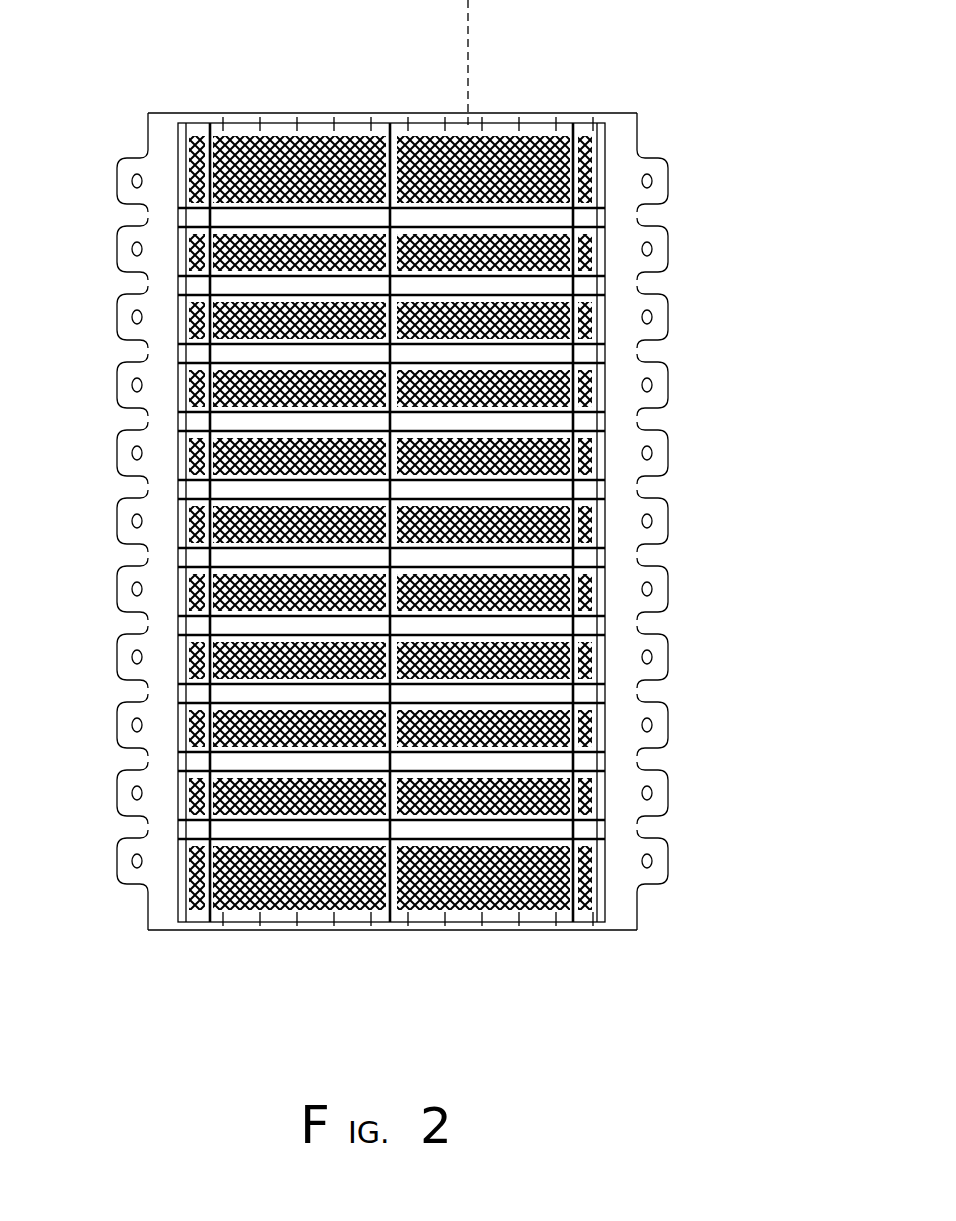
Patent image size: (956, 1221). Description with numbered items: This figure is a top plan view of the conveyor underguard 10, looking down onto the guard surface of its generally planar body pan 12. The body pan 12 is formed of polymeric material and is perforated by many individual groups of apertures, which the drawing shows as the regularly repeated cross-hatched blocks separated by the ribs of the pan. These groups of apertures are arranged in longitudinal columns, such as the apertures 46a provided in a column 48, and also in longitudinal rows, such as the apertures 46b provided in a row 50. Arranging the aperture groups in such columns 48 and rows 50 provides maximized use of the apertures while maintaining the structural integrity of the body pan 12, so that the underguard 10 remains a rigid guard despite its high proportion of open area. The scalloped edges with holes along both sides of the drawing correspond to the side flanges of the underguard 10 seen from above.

The conveyor underguard 10 is at (697, 313).
The body pan 12 is at (560, 219).
The apertures 46a is at (470, 155).
The apertures 46b is at (564, 152).
The column 48 is at (468, 62).
The row 50 is at (672, 146).